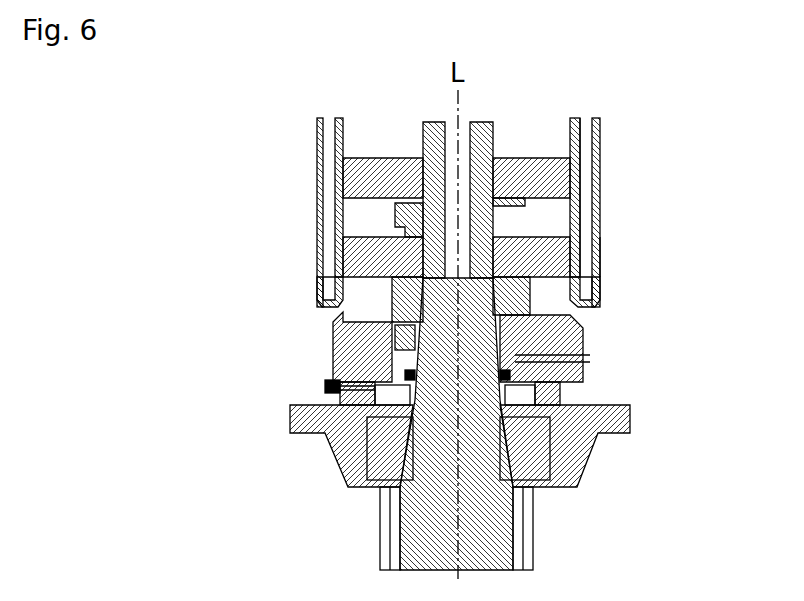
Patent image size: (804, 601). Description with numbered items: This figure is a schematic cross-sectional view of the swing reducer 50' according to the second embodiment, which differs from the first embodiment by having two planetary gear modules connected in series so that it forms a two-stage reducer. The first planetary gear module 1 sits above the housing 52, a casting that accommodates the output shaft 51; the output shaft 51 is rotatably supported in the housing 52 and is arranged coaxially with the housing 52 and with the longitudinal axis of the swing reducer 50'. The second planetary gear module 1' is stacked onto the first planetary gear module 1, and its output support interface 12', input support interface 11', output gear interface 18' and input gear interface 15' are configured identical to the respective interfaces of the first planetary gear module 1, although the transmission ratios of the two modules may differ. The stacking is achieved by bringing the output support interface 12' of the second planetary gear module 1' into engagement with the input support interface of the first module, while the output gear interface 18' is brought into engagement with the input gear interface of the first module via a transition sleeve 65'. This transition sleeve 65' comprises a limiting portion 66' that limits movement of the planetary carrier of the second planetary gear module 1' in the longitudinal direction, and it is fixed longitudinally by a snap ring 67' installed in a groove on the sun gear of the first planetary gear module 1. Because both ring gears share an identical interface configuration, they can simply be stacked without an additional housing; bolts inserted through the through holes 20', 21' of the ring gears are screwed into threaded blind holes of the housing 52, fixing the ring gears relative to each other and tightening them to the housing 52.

The output gear interface 18' is at (373, 131).
The input gear interface 15' is at (482, 302).
The input support interface 11' is at (626, 170).
The through hole 20' is at (676, 170).
The second planetary gear module 1' is at (665, 212).
The output support interface 12' is at (535, 179).
The through hole 21' is at (237, 205).
The limiting portion 66' is at (285, 249).
The transition sleeve 65' is at (628, 221).
The planetary gear module 1 is at (667, 257).
The snap ring 67' is at (605, 275).
The swing reducer 50' is at (413, 308).
The housing 52 is at (628, 446).
The output shaft 51 is at (500, 535).